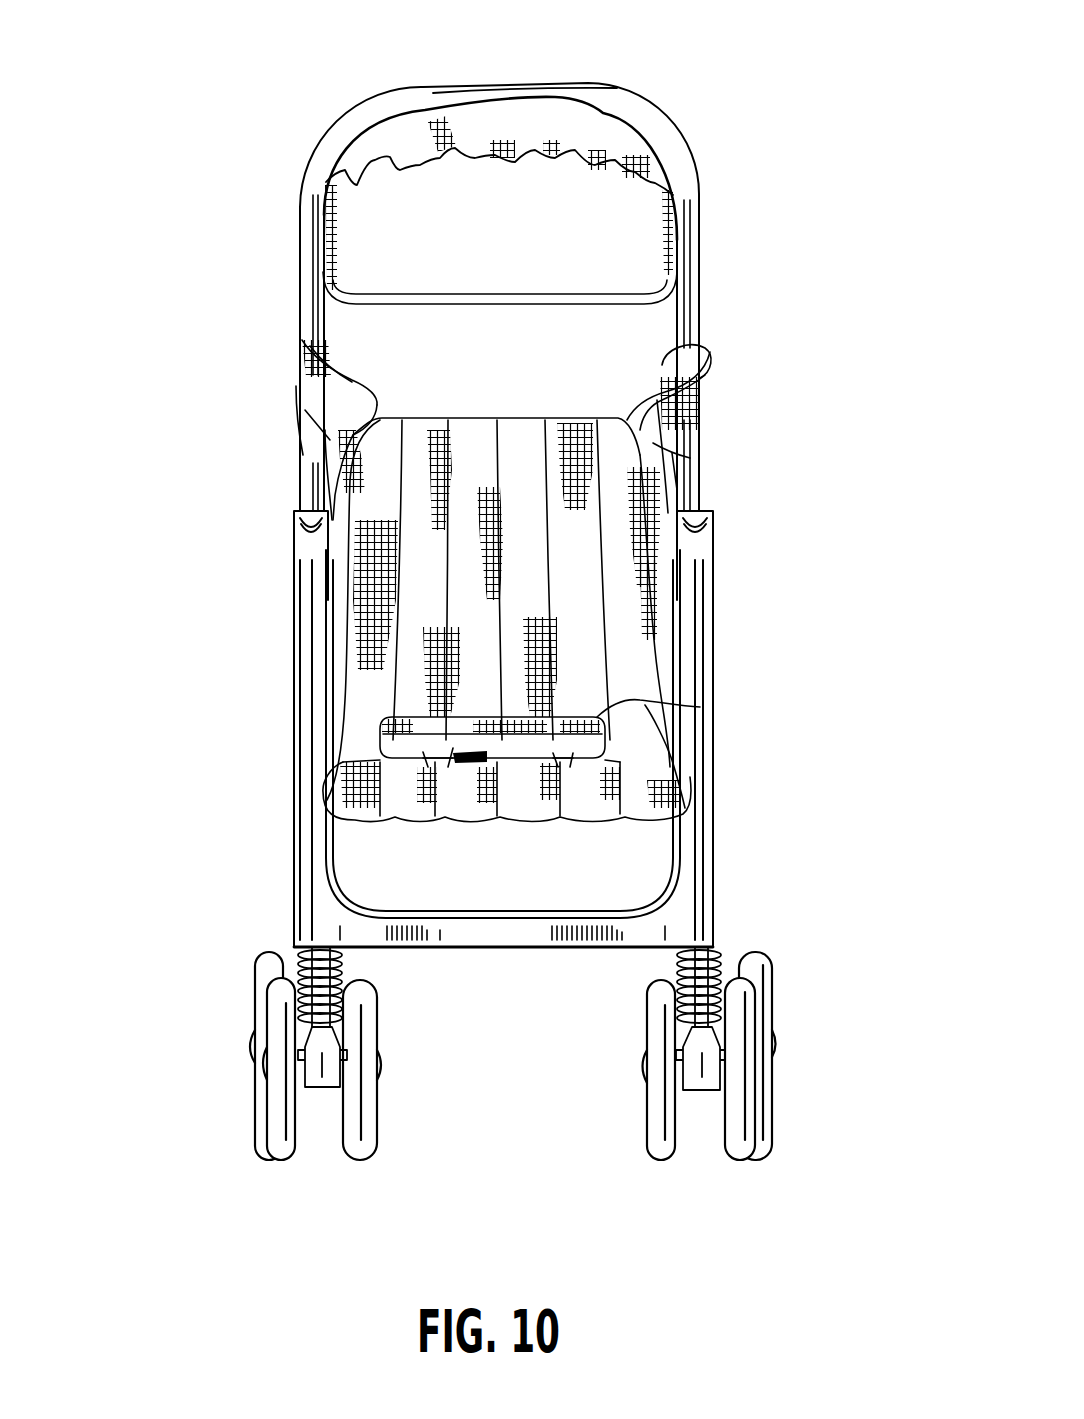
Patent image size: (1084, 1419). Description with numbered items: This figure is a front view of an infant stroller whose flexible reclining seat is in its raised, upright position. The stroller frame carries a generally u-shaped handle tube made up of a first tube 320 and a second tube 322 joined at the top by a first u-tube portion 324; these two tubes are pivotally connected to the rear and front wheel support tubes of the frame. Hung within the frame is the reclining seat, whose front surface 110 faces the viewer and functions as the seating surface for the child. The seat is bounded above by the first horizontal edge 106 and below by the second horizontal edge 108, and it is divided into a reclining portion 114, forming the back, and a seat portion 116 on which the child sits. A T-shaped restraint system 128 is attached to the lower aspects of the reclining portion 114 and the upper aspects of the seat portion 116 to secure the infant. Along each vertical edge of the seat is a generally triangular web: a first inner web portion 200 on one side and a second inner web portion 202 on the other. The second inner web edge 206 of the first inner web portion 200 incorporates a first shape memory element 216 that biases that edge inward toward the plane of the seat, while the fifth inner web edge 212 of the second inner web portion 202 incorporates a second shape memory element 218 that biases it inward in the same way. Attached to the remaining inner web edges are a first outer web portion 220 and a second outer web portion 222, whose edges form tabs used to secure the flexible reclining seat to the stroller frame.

The first horizontal edge 106 is at (500, 418).
The second horizontal edge 108 is at (581, 818).
The front surface 110 is at (578, 577).
The reclining portion 114 is at (478, 552).
The seat portion 116 is at (668, 770).
The T-shaped restraint system 128 is at (590, 706).
The first inner web portion 200 is at (355, 407).
The second inner web portion 202 is at (653, 443).
The second inner web edge 206 is at (225, 360).
The first shape memory element 216 is at (307, 370).
The fifth inner web edge 212 is at (772, 388).
The second shape memory element 218 is at (697, 400).
The first outer web portion 220 is at (308, 390).
The second outer web portion 222 is at (700, 350).
The first tube 320 is at (306, 217).
The second tube 322 is at (696, 200).
The first u-tube portion 324 is at (581, 94).